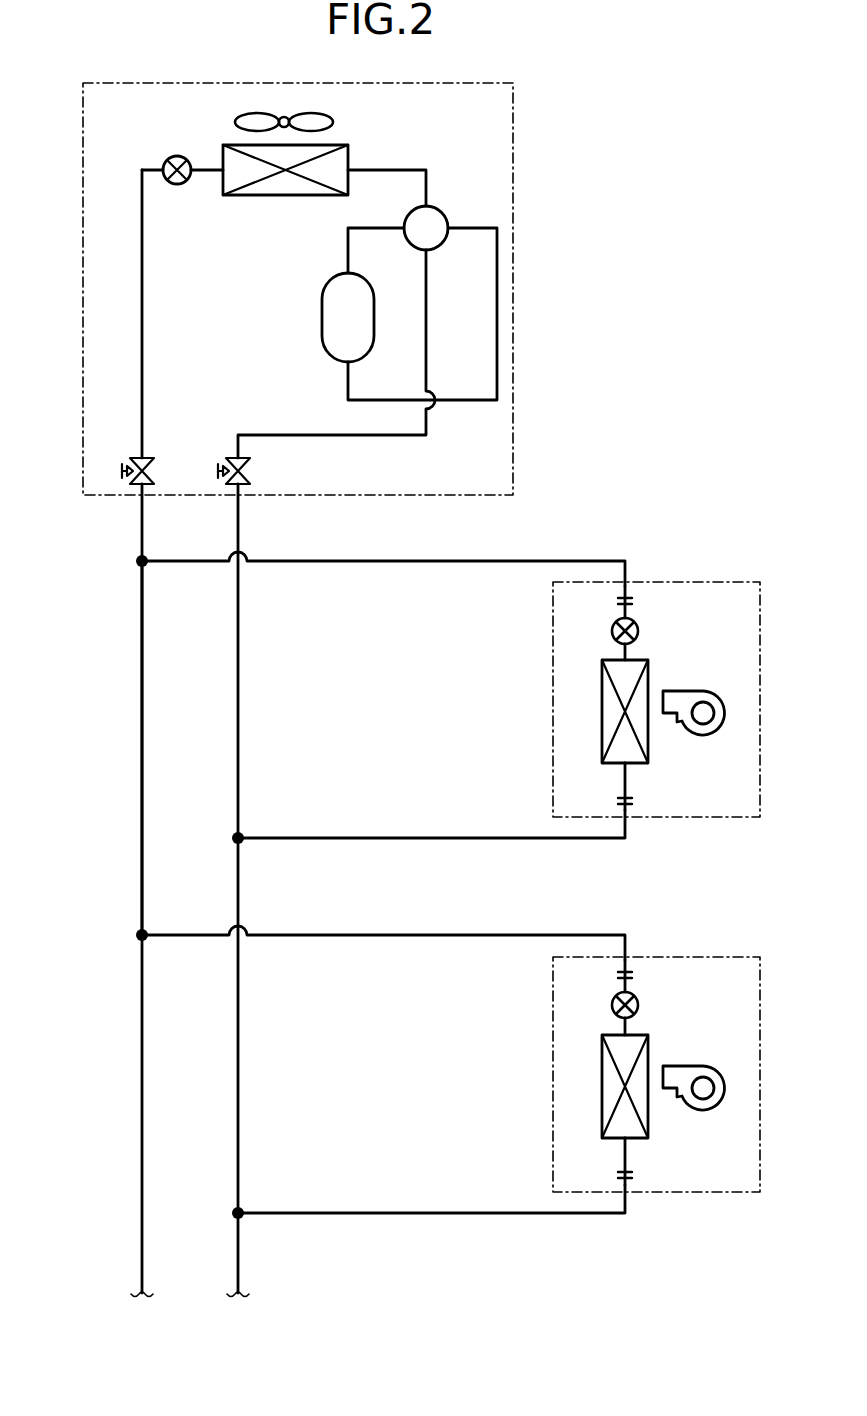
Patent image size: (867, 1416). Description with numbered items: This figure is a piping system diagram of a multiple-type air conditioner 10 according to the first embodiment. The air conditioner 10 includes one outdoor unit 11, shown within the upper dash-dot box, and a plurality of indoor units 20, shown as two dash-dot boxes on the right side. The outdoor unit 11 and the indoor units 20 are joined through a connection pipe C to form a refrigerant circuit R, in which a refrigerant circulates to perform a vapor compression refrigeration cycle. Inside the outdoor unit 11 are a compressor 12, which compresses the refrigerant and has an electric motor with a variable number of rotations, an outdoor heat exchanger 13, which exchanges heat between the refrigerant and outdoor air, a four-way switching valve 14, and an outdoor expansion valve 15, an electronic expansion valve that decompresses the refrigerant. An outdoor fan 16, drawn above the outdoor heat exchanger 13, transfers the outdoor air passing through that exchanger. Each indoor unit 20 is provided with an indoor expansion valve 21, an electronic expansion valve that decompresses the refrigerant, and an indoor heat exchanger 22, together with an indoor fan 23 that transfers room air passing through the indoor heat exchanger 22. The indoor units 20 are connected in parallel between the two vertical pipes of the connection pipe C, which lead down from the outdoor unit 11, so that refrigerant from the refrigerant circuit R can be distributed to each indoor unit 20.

The air conditioner 10 is at (660, 182).
The outdoor unit 11 is at (513, 215).
The compressor 12 is at (322, 318).
The outdoor heat exchanger 13 is at (349, 156).
The four-way switching valve 14 is at (442, 212).
The outdoor expansion valve 15 is at (177, 185).
The outdoor fan 16 is at (236, 122).
The indoor unit 20 is at (553, 678).
The indoor expansion valve 21 is at (640, 632).
The indoor heat exchanger 22 is at (602, 710).
The indoor fan 23 is at (700, 690).
The refrigerant circuit R is at (557, 560).
The connection pipe C is at (142, 682).